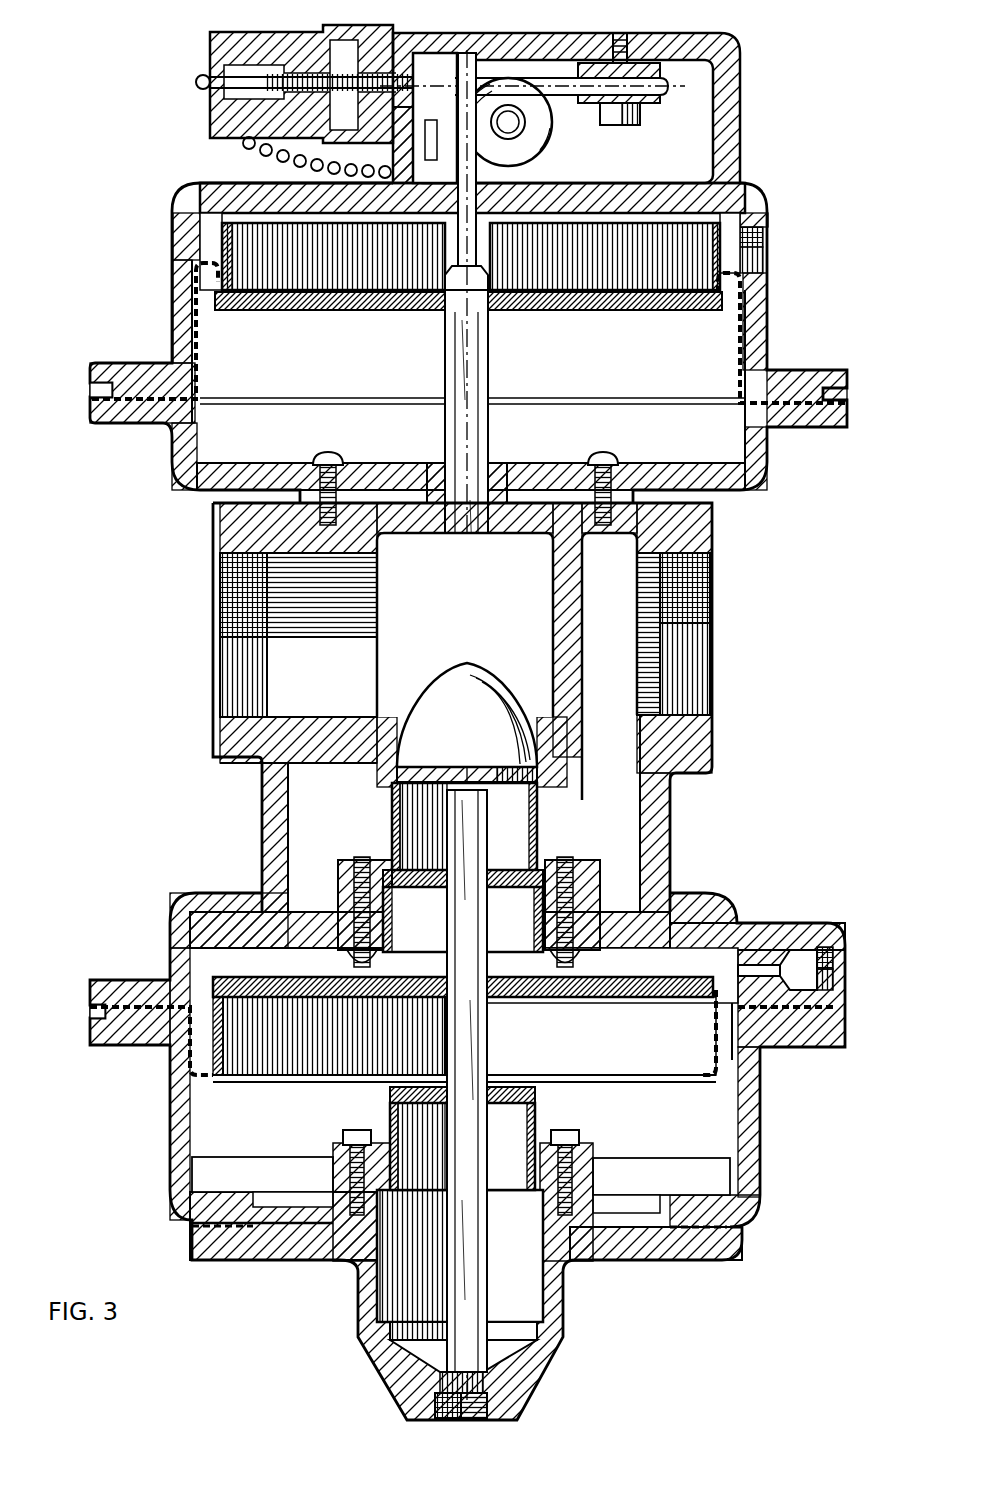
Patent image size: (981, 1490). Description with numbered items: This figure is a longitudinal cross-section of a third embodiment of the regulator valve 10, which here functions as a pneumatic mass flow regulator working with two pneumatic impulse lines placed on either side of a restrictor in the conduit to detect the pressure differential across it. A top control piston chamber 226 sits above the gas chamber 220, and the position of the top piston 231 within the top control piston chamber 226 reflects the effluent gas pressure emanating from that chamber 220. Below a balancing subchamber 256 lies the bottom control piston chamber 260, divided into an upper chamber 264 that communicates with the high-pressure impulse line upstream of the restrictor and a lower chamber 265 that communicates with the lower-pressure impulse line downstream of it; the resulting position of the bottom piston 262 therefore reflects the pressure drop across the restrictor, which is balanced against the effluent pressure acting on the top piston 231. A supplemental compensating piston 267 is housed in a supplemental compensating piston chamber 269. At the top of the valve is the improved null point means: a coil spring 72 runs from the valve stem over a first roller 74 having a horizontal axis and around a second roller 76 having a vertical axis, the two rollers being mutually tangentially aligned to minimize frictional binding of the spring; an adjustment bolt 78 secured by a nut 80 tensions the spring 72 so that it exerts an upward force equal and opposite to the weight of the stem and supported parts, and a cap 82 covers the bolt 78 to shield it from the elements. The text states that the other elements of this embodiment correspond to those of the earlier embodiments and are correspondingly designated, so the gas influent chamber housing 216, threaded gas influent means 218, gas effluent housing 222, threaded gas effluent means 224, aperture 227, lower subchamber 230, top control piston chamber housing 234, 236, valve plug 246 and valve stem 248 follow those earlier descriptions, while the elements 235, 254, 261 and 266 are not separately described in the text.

The regulator valve 10 is at (688, 1276).
The coil spring 72 is at (565, 95).
The first roller 74 is at (548, 138).
The second roller 76 is at (655, 110).
The bolt 78 is at (438, 125).
The nut 80 is at (258, 144).
The cap 82 is at (212, 45).
The intermediate housing wall 216 is at (690, 757).
The stator winding 218 is at (700, 648).
The gas influent chamber 220 is at (338, 682).
The intermediate housing 222 is at (212, 520).
The stator winding 224 is at (228, 668).
The top control piston chamber 226 is at (645, 376).
The bearing 227 is at (440, 463).
The upper casing 230 is at (735, 356).
The top piston 231 is at (322, 310).
The casing bottom plate 234 is at (180, 447).
The screws 235 is at (324, 450).
The liner 236 is at (185, 240).
The cam body 246 is at (476, 736).
The shaft 248 is at (480, 442).
The mounting flange 254 is at (135, 985).
The balancing subchamber 256 is at (520, 838).
The bottom control piston chamber 260 is at (683, 1107).
The lower casing wall 261 is at (178, 1058).
The bottom piston 262 is at (548, 1002).
The upper chamber 264 is at (668, 962).
The lower chamber 265 is at (680, 1040).
The screw 266 is at (835, 975).
The supplemental compensating piston 267 is at (498, 1105).
The supplemental compensating piston chamber 269 is at (509, 1256).